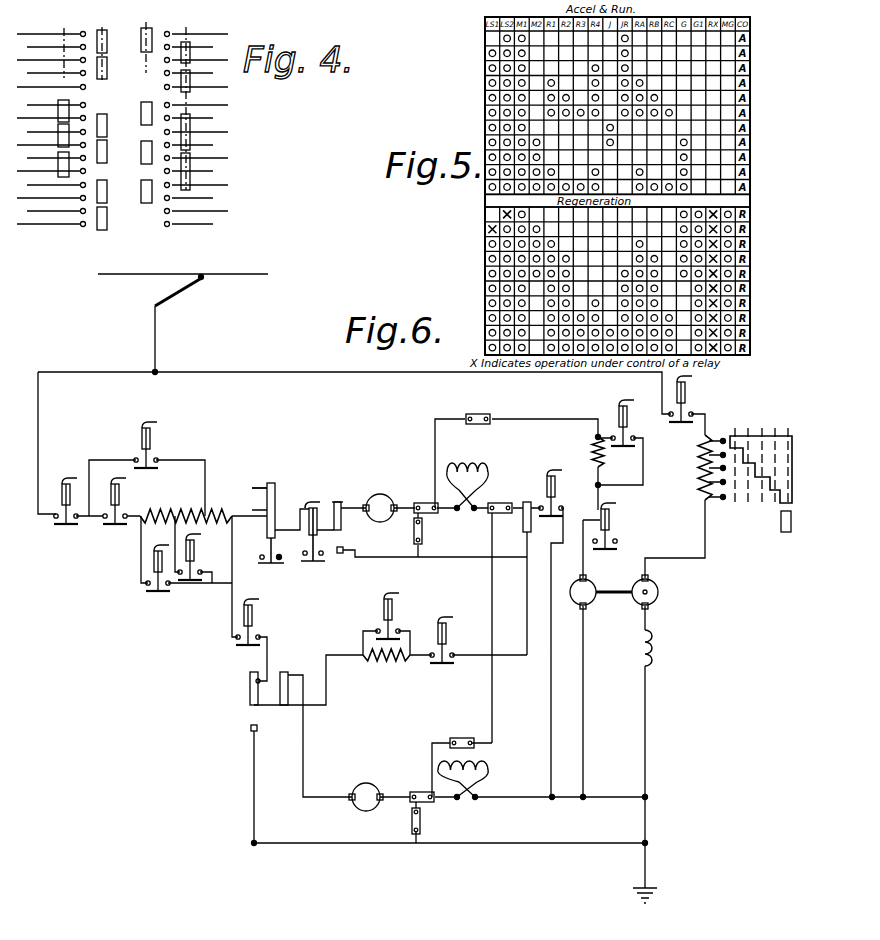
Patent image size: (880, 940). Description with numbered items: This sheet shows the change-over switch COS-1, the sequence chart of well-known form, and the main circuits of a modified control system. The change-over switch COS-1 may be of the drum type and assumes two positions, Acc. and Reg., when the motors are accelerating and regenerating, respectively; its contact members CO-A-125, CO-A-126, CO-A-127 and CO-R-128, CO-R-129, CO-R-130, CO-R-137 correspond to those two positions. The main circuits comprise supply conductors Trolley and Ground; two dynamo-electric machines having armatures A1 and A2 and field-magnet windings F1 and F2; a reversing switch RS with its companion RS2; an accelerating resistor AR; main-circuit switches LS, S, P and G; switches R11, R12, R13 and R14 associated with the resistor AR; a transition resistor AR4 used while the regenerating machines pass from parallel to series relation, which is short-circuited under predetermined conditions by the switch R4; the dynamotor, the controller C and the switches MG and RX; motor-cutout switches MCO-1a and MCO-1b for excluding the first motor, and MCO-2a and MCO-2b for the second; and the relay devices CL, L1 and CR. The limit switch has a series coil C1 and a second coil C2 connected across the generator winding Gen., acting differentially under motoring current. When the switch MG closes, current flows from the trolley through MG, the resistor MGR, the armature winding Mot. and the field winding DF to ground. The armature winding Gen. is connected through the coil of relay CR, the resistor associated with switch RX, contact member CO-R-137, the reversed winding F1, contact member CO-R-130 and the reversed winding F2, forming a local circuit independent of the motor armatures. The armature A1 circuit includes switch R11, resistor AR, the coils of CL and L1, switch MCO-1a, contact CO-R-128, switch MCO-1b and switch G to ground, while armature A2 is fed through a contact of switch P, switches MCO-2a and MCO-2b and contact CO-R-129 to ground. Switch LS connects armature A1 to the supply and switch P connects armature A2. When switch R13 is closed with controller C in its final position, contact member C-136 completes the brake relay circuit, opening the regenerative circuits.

In FIG. 4, the change-over switch COS-1 is at (122, 137).
In FIG. 6, the supply-circuit conductor Trolley is at (205, 284).
In FIG. 6, the line switch LS is at (64, 512).
In FIG. 6, the resistor switch R11 is at (114, 512).
In FIG. 6, the resistor switch R12 is at (153, 446).
In FIG. 6, the resistor switch R13 is at (159, 580).
In FIG. 6, the resistor switch R14 is at (190, 596).
In FIG. 6, the accelerating resistor AR is at (186, 498).
In FIG. 6, the series-actuating coil C1 is at (267, 528).
In FIG. 6, the second actuating coil C2 is at (267, 495).
In FIG. 6, the relay device or limit switch L1 is at (313, 542).
In FIG. 6, the motor-cutout switch MCO-1a is at (345, 490).
In FIG. 6, the armature A1 is at (380, 508).
In FIG. 6, the contact member CO-A-125 is at (424, 503).
In FIG. 6, the contact member CO-R-128 is at (414, 532).
In FIG. 6, the contact member CO-R-137 is at (478, 414).
In FIG. 6, the field-magnet winding F1 is at (468, 463).
In FIG. 6, the reversing switch RS is at (466, 515).
In FIG. 6, the contact member CO-A-126 is at (494, 516).
In FIG. 6, the motor-cutout switch MCO-1b is at (529, 497).
In FIG. 6, the main-circuit switch G is at (558, 493).
In FIG. 6, the switch RX is at (613, 437).
In FIG. 6, the relay device or limit switch CR is at (612, 525).
In FIG. 6, the switch MG is at (688, 399).
In FIG. 6, the resistor MGR is at (693, 467).
In FIG. 6, the controller C is at (761, 454).
In FIG. 6, the contact member C-136 is at (784, 533).
In FIG. 6, the armature winding Gen is at (601, 597).
In FIG. 6, the armature winding Mot is at (658, 594).
In FIG. 6, the field winding DF is at (652, 652).
In FIG. 6, the main-circuit switch P is at (255, 622).
In FIG. 6, the motor-cutout switch MCO-2a is at (250, 685).
In FIG. 6, the motor-cutout switch MCO-2b is at (286, 672).
In FIG. 6, the switch R4 is at (384, 624).
In FIG. 6, the transition resistor AR4 is at (386, 670).
In FIG. 6, the main-circuit switch S is at (452, 666).
In FIG. 6, the contact member CO-R-130 is at (463, 728).
In FIG. 6, the contact member CO-A-127 is at (423, 782).
In FIG. 6, the armature A2 is at (366, 797).
In FIG. 6, the contact member CO-R-129 is at (411, 820).
In FIG. 6, the field-magnet winding F2 is at (486, 766).
In FIG. 6, the reversing switch RS2 is at (466, 802).
In FIG. 6, the supply-circuit conductor Ground is at (676, 905).